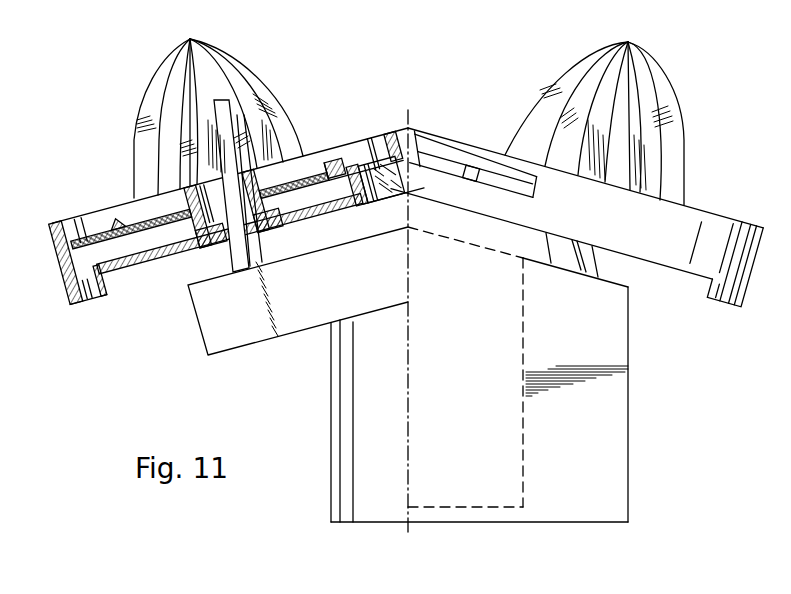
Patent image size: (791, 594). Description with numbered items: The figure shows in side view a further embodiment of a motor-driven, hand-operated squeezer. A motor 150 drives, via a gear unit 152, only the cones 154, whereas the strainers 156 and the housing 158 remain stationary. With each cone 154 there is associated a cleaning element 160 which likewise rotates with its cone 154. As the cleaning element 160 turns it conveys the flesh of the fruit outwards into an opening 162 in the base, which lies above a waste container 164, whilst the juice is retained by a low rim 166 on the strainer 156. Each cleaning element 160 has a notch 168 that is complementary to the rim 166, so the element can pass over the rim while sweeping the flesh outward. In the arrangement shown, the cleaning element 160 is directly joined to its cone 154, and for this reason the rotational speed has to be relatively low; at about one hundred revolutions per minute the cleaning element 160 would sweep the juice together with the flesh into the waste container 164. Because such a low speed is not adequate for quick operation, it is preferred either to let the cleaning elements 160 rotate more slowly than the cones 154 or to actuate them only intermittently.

The motor 150 is at (343, 505).
The gear unit 152 is at (293, 322).
The cone 154 is at (248, 75).
The strainer 156 is at (67, 218).
The housing 158 is at (150, 263).
The cleaning element 160 is at (384, 128).
The opening 162 is at (372, 203).
The waste container 164 is at (484, 508).
The rim 166 is at (115, 222).
The notch 168 is at (331, 165).